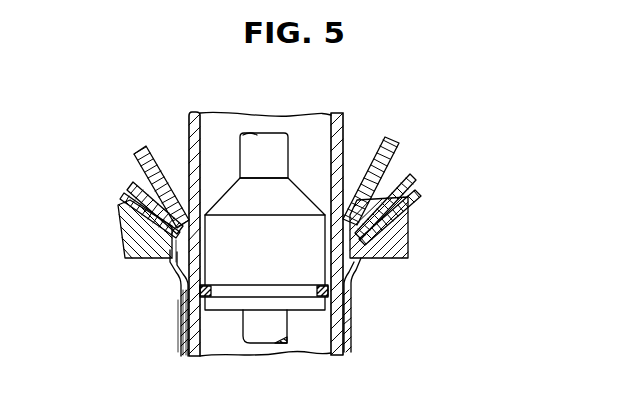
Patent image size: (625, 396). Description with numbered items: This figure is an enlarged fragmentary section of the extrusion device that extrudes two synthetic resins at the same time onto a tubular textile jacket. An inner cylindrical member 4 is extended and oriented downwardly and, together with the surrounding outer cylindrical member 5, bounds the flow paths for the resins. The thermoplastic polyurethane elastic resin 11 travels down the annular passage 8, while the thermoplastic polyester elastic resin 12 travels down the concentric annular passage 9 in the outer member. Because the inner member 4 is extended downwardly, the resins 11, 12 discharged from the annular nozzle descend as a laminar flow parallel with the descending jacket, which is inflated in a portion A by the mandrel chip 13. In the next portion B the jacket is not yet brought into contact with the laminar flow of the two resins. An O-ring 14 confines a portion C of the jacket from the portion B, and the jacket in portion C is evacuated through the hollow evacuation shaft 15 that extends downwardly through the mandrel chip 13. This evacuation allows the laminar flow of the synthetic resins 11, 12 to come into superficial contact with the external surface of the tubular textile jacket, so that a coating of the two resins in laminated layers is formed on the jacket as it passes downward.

The portion A is at (343, 132).
The inner cylindrical member 4 is at (393, 147).
The annular passage 8 is at (409, 164).
The annular passage 9 is at (417, 186).
The thermoplastic polyurethane elastic resin 11 is at (388, 188).
The thermoplastic polyester elastic resin 12 is at (392, 203).
The outer cylindrical member 5 is at (404, 230).
The mandrel chip 13 is at (258, 193).
The hollow evacuation shaft 15 is at (283, 160).
The O-ring 14 is at (183, 297).
The portion B is at (172, 273).
The portion C is at (181, 347).